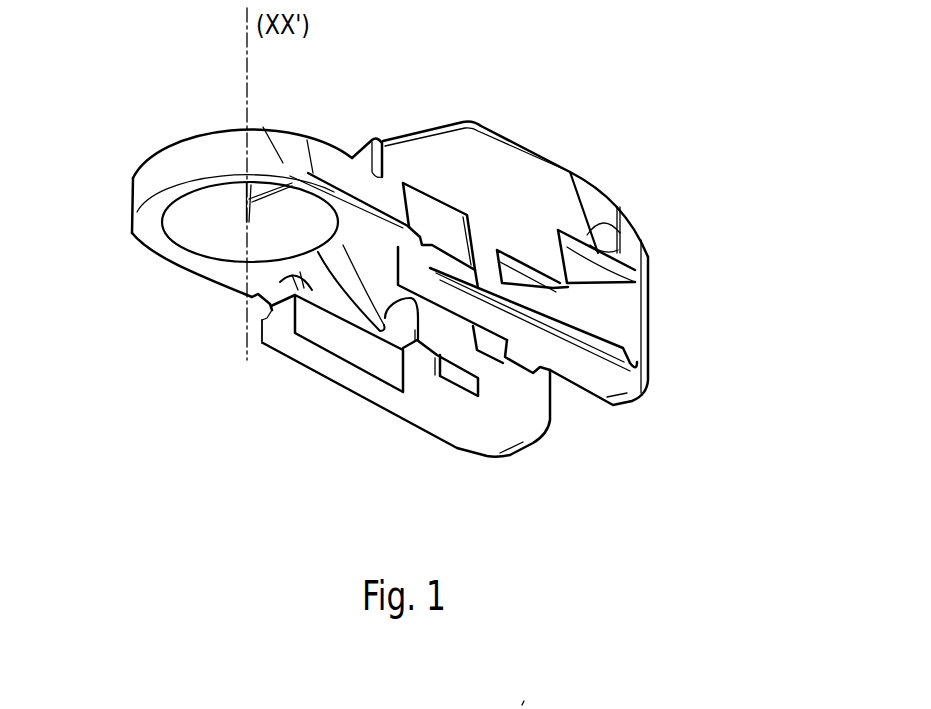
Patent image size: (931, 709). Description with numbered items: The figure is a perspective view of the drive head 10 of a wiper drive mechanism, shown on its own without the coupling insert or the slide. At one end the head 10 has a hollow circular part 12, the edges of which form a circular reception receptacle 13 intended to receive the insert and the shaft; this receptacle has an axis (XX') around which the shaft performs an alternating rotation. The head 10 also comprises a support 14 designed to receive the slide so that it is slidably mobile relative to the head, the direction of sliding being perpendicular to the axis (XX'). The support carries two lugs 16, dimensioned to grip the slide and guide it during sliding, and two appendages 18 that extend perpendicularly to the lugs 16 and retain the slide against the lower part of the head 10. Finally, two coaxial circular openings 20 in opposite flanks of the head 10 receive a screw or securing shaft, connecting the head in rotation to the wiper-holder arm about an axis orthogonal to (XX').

The drive head 10 is at (652, 53).
The hollow circular part 12 is at (173, 161).
The circular reception receptacle 13 is at (222, 209).
The support 14 is at (318, 366).
The lugs 16 is at (380, 393).
The appendages 18 is at (450, 388).
The coaxial circular openings 20 is at (592, 243).